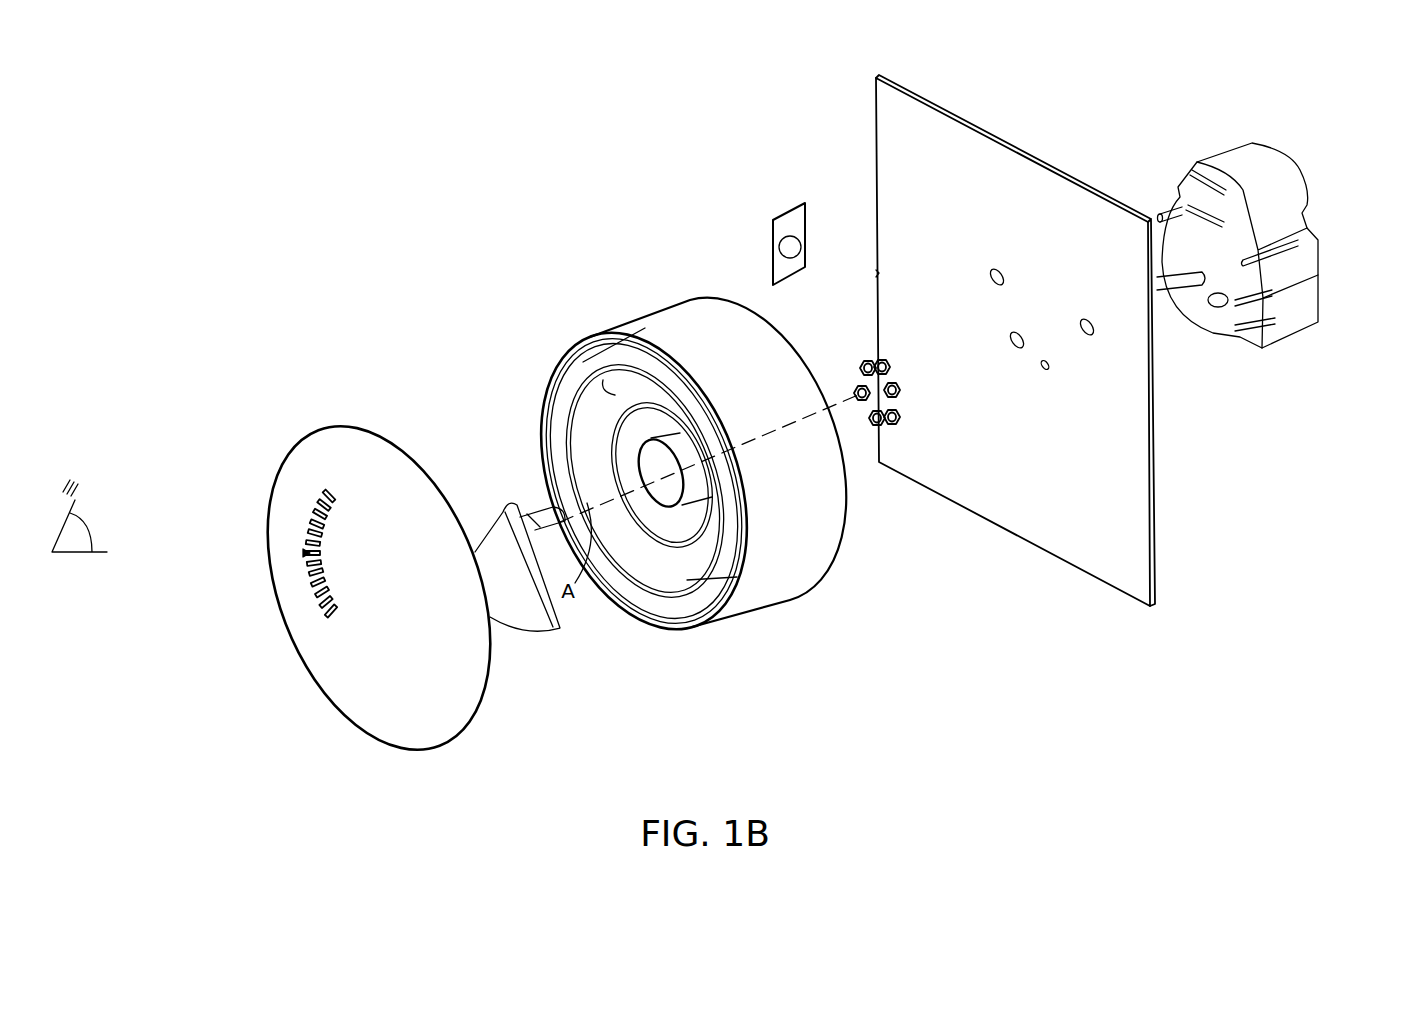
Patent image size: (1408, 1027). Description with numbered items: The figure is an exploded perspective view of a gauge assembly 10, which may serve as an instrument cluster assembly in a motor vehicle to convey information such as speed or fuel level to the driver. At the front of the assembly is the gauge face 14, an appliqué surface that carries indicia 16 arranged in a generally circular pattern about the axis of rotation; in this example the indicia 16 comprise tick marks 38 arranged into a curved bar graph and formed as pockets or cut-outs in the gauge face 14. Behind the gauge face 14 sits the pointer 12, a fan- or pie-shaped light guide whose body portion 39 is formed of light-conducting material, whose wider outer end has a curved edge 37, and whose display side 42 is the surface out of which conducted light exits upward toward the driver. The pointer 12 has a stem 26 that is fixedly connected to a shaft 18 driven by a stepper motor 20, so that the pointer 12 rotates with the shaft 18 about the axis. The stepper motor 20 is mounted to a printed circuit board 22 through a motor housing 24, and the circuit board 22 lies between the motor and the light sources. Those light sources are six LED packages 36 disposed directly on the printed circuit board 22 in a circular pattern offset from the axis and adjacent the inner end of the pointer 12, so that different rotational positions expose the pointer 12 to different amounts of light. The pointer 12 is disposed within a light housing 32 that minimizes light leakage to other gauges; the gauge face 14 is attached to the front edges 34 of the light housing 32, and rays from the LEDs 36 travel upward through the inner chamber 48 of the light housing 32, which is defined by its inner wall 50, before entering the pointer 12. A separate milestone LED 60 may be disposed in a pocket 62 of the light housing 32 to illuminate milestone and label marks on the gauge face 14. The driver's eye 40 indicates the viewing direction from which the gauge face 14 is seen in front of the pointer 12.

The gauge assembly 10 is at (283, 142).
The pointer 12 is at (558, 630).
The gauge face 14 is at (375, 453).
The indicia 16 is at (317, 498).
The shaft 18 is at (1176, 282).
The stepper motor 20 is at (1313, 178).
The printed circuit board 22 is at (1045, 190).
The motor housing 24 is at (1330, 282).
The stem 26 is at (540, 515).
The light housing 32 is at (750, 610).
The front edges 34 is at (603, 367).
The LED packages 36 is at (862, 362).
The curved edge 37 is at (495, 620).
The tick marks 38 is at (315, 507).
The body portion 39 is at (510, 528).
The driver's eye 40 is at (90, 525).
The display side 42 is at (527, 628).
The inner chamber 48 is at (693, 487).
The inner wall 50 is at (713, 457).
The milestone LED 60 is at (790, 208).
The pocket 62 is at (607, 368).